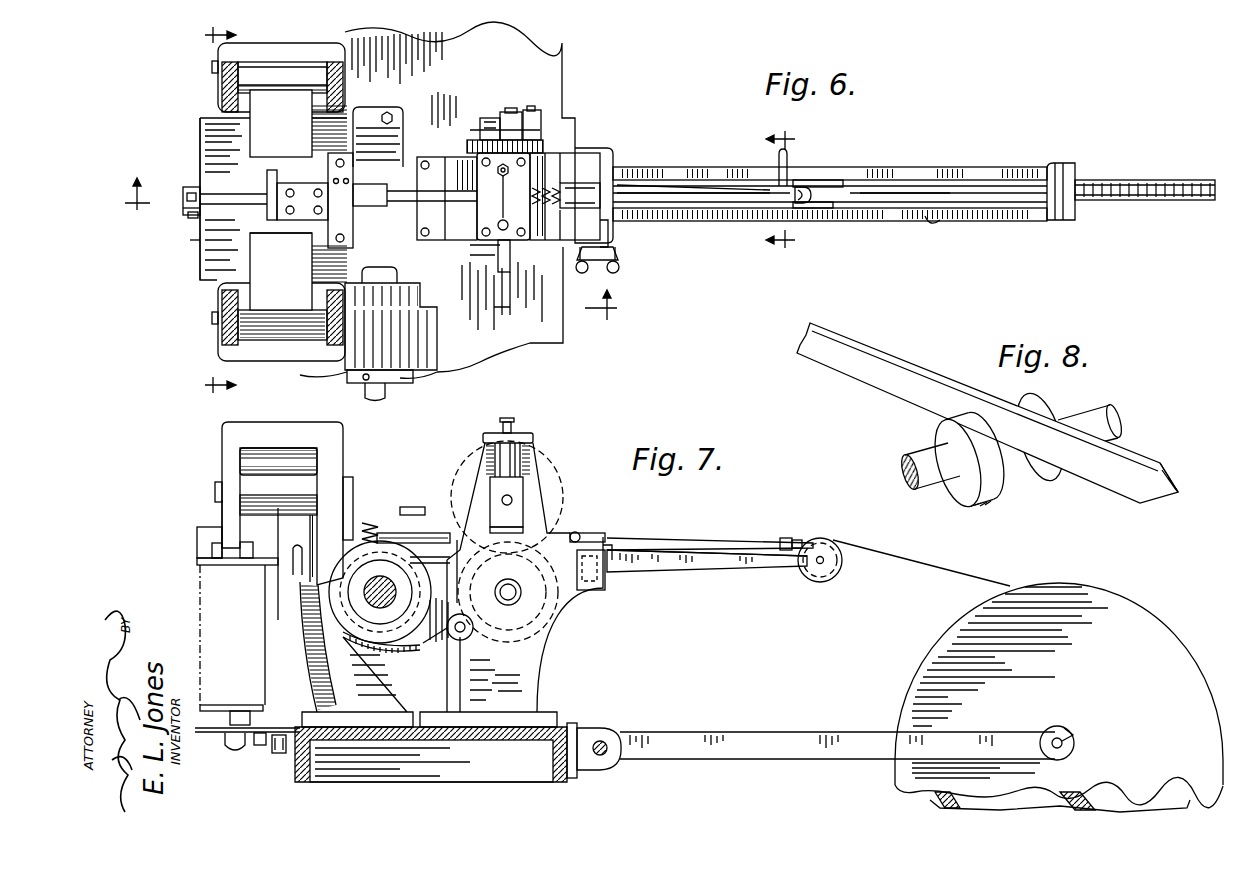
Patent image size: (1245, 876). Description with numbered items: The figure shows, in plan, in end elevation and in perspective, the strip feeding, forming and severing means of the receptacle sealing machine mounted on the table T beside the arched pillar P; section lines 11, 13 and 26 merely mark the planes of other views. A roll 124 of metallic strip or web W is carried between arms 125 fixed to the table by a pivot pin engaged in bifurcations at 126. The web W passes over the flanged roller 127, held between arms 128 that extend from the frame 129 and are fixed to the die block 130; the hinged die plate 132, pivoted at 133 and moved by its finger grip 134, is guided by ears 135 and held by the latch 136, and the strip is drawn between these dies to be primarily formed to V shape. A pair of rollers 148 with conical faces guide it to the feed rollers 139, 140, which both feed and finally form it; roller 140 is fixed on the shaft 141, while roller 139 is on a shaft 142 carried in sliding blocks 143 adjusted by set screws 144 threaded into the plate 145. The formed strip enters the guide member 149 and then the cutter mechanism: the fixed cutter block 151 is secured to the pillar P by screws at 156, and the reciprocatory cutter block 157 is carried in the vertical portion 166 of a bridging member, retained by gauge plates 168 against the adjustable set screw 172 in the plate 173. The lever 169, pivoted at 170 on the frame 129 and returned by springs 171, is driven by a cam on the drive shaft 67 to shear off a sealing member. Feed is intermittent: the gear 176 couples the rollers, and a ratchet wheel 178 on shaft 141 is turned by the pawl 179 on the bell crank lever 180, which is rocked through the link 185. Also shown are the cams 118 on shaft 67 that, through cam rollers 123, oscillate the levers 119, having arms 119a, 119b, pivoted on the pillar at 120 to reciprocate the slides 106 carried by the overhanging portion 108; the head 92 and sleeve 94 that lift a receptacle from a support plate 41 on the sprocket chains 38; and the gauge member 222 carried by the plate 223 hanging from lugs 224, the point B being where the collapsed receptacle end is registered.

In FIG. 6, the section line 11 is at (371, 241).
In FIG. 6, the section line 13 is at (232, 211).
In FIG. 6, the section line 26 is at (776, 189).
In FIG. 7, the sprocket chains 38 is at (280, 756).
In FIG. 7, the receptacle support plates 41 is at (262, 745).
In FIG. 6, the drive shaft 67 is at (385, 397).
In FIG. 7, the drive shaft 67 is at (383, 585).
In FIG. 7, the head 92 is at (262, 709).
In FIG. 7, the sleeve 94 is at (233, 750).
In FIG. 7, the slides 106 is at (212, 552).
In FIG. 7, the overhanging portion 108 is at (197, 533).
In FIG. 6, the cams 118 is at (423, 346).
In FIG. 7, the cams 118 is at (428, 556).
In FIG. 7, the levers 119 is at (308, 430).
In FIG. 6, the lever arms 119a is at (222, 88).
In FIG. 7, the lever arms 119a is at (222, 509).
In FIG. 6, the lever arms 119b is at (327, 68).
In FIG. 7, the lever arms 119b is at (332, 441).
In FIG. 6, the lever pivot 120 is at (214, 78).
In FIG. 7, the lever pivot 120 is at (216, 493).
In FIG. 7, the cam following rollers 123 is at (305, 590).
In FIG. 6, the roll of metallic strip 124 is at (1105, 182).
In FIG. 7, the roll of metallic strip 124 is at (1093, 607).
In FIG. 6, the arms 125 is at (928, 213).
In FIG. 7, the arms 125 is at (772, 718).
In FIG. 6, the bifurcated arm ends 126 is at (1058, 165).
In FIG. 7, the bifurcated arm ends 126 is at (1072, 738).
In FIG. 6, the flanged roller 127 is at (822, 203).
In FIG. 7, the flanged roller 127 is at (830, 580).
In FIG. 6, the arms 128 is at (690, 180).
In FIG. 7, the arms 128 is at (711, 568).
In FIG. 6, the frame 129 is at (570, 157).
In FIG. 7, the frame 129 is at (540, 660).
In FIG. 7, the die block 130 is at (722, 548).
In FIG. 6, the die plate 132 is at (729, 185).
In FIG. 7, the die plate 132 is at (680, 540).
In FIG. 6, the die plate pivot 133 is at (590, 190).
In FIG. 7, the die plate pivot 133 is at (580, 537).
In FIG. 6, the finger grip 134 is at (830, 183).
In FIG. 7, the finger grip 134 is at (798, 538).
In FIG. 6, the ears 135 is at (780, 205).
In FIG. 7, the ears 135 is at (785, 538).
In FIG. 6, the latch 136 is at (790, 156).
In FIG. 6, the feed roller 139 is at (462, 238).
In FIG. 7, the feed roller 139 is at (542, 468).
In FIG. 7, the feed roller 140 is at (543, 616).
In FIG. 6, the shaft 141 is at (510, 262).
In FIG. 7, the shaft 141 is at (508, 606).
In FIG. 7, the shaft 142 is at (512, 498).
In FIG. 7, the blocks 143 is at (519, 519).
In FIG. 6, the set screws 144 is at (498, 212).
In FIG. 7, the set screws 144 is at (512, 421).
In FIG. 6, the plate 145 is at (506, 196).
In FIG. 7, the plate 145 is at (533, 439).
In FIG. 6, the guide rollers 148 is at (556, 212).
In FIG. 7, the guide rollers 148 is at (590, 597).
In FIG. 8, the guide rollers 148 is at (1000, 490).
In FIG. 6, the guide member 149 is at (426, 240).
In FIG. 7, the guide member 149 is at (447, 537).
In FIG. 6, the cutter block 151 is at (462, 170).
In FIG. 7, the cutter block 151 is at (415, 508).
In FIG. 6, the cutter securing screws 156 is at (427, 160).
In FIG. 6, the cutter block 157 is at (280, 206).
In FIG. 6, the vertical portion 166 is at (380, 124).
In FIG. 7, the vertical portion 166 is at (350, 489).
In FIG. 6, the gauge plates 168 is at (205, 126).
In FIG. 7, the lever 169 is at (390, 641).
In FIG. 7, the lever pivot 170 is at (455, 637).
In FIG. 7, the springs 171 is at (376, 521).
In FIG. 6, the set screw 172 is at (330, 208).
In FIG. 6, the plate 173 is at (353, 172).
In FIG. 6, the gear 176 is at (452, 158).
In FIG. 6, the ratchet wheel 178 is at (545, 137).
In FIG. 6, the pawl 179 is at (484, 118).
In FIG. 6, the bell crank lever 180 is at (507, 110).
In FIG. 6, the link 185 is at (531, 110).
In FIG. 6, the gauge member 222 is at (185, 205).
In FIG. 6, the plate 223 is at (190, 222).
In FIG. 6, the lugs 224 is at (196, 245).
In FIG. 7, the base B is at (210, 590).
In FIG. 6, the arched pillar P is at (367, 120).
In FIG. 7, the arched pillar P is at (370, 705).
In FIG. 6, the table T is at (523, 340).
In FIG. 7, the table T is at (488, 770).
In FIG. 6, the metallic strip or web W is at (868, 192).
In FIG. 7, the metallic strip or web W is at (923, 563).
In FIG. 8, the metallic strip or web W is at (1120, 458).